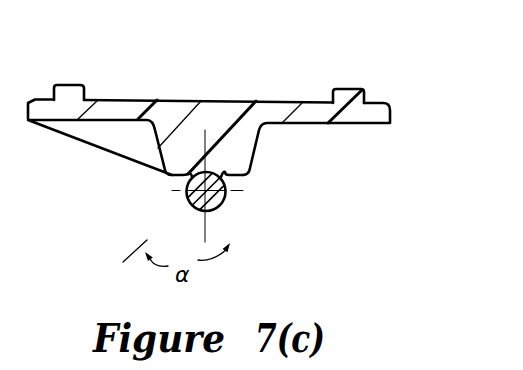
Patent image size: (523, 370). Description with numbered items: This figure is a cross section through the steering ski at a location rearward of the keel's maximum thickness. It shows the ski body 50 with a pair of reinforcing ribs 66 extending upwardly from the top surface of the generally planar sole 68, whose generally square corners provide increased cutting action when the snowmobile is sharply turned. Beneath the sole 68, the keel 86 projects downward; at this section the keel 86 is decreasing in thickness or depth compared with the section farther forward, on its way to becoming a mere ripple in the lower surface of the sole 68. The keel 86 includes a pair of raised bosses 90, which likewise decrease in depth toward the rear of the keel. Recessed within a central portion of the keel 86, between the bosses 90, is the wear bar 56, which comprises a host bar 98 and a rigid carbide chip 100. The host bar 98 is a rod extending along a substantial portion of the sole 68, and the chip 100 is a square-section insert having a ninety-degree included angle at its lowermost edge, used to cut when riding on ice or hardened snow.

The ski body 50 is at (378, 113).
The wear bar 56 is at (222, 207).
The reinforcing ribs 66 is at (72, 93).
The sole 68 is at (313, 112).
The keel 86 is at (248, 139).
The raised bosses 90 is at (173, 175).
The host bar 98 is at (226, 195).
The chip 100 is at (197, 205).